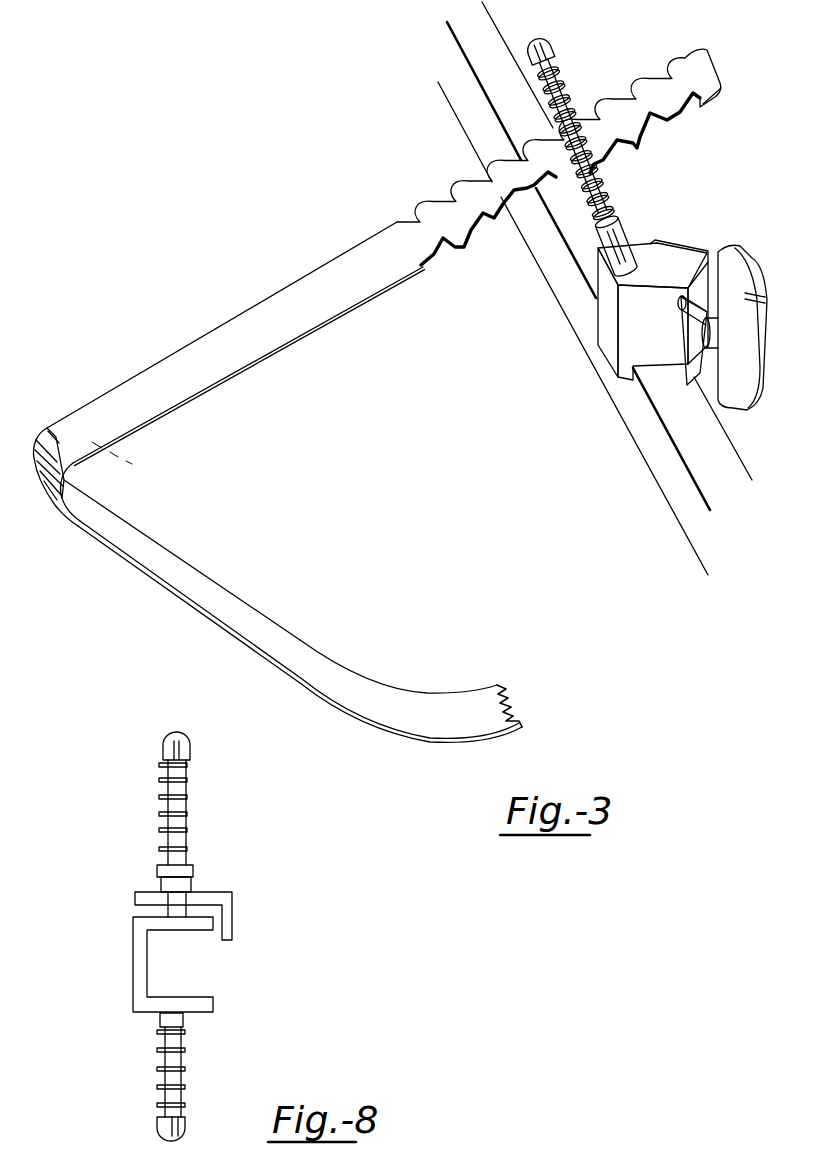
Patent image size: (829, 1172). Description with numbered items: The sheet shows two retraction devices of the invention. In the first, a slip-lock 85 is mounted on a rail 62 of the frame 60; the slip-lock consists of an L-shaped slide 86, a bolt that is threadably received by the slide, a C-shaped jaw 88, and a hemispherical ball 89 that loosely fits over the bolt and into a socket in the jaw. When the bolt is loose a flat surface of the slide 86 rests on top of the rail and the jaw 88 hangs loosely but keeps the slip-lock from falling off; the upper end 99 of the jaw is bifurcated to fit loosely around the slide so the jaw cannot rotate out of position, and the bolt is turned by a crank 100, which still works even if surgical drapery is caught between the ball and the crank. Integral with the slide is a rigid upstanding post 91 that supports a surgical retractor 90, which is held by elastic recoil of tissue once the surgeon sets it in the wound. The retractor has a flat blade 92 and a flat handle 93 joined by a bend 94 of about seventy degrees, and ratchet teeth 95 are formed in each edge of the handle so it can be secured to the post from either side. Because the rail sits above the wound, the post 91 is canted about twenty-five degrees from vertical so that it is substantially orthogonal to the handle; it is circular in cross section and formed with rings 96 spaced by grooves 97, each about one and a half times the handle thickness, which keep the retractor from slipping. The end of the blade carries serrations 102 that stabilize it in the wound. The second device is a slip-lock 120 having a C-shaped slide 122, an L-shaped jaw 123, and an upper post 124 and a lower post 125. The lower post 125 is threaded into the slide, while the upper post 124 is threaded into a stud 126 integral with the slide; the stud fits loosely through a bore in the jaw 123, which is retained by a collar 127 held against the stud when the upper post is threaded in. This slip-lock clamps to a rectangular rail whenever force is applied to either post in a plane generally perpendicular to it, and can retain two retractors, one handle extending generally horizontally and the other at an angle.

In FIG. 3, the frame 60 is at (655, 494).
In FIG. 3, the rail 62 is at (647, 448).
In FIG. 3, the slip-lock 85 is at (631, 217).
In FIG. 3, the L-shaped slide 86 is at (608, 345).
In FIG. 3, the C-shaped jaw 88 is at (702, 375).
In FIG. 3, the hemispherical ball 89 is at (722, 332).
In FIG. 3, the surgical retractor 90 is at (377, 395).
In FIG. 3, the upstanding post 91 is at (567, 148).
In FIG. 3, the blade 92 is at (250, 613).
In FIG. 3, the handle 93 is at (297, 324).
In FIG. 3, the bend 94 is at (36, 429).
In FIG. 3, the ratchet teeth 95 is at (447, 204).
In FIG. 3, the rings 96 is at (545, 100).
In FIG. 3, the grooves 97 is at (559, 90).
In FIG. 3, the upper end of C-shaped jaw 99 is at (680, 253).
In FIG. 3, the crank 100 is at (733, 247).
In FIG. 3, the serrations 102 is at (513, 705).
In FIG. 8, the slip-lock 120 is at (189, 936).
In FIG. 8, the C-shaped slide 122 is at (132, 997).
In FIG. 8, the L-shaped jaw 123 is at (233, 900).
In FIG. 8, the upper post 124 is at (188, 802).
In FIG. 8, the lower post 125 is at (178, 1077).
In FIG. 8, the stud 126 is at (197, 877).
In FIG. 8, the collar 127 is at (157, 872).